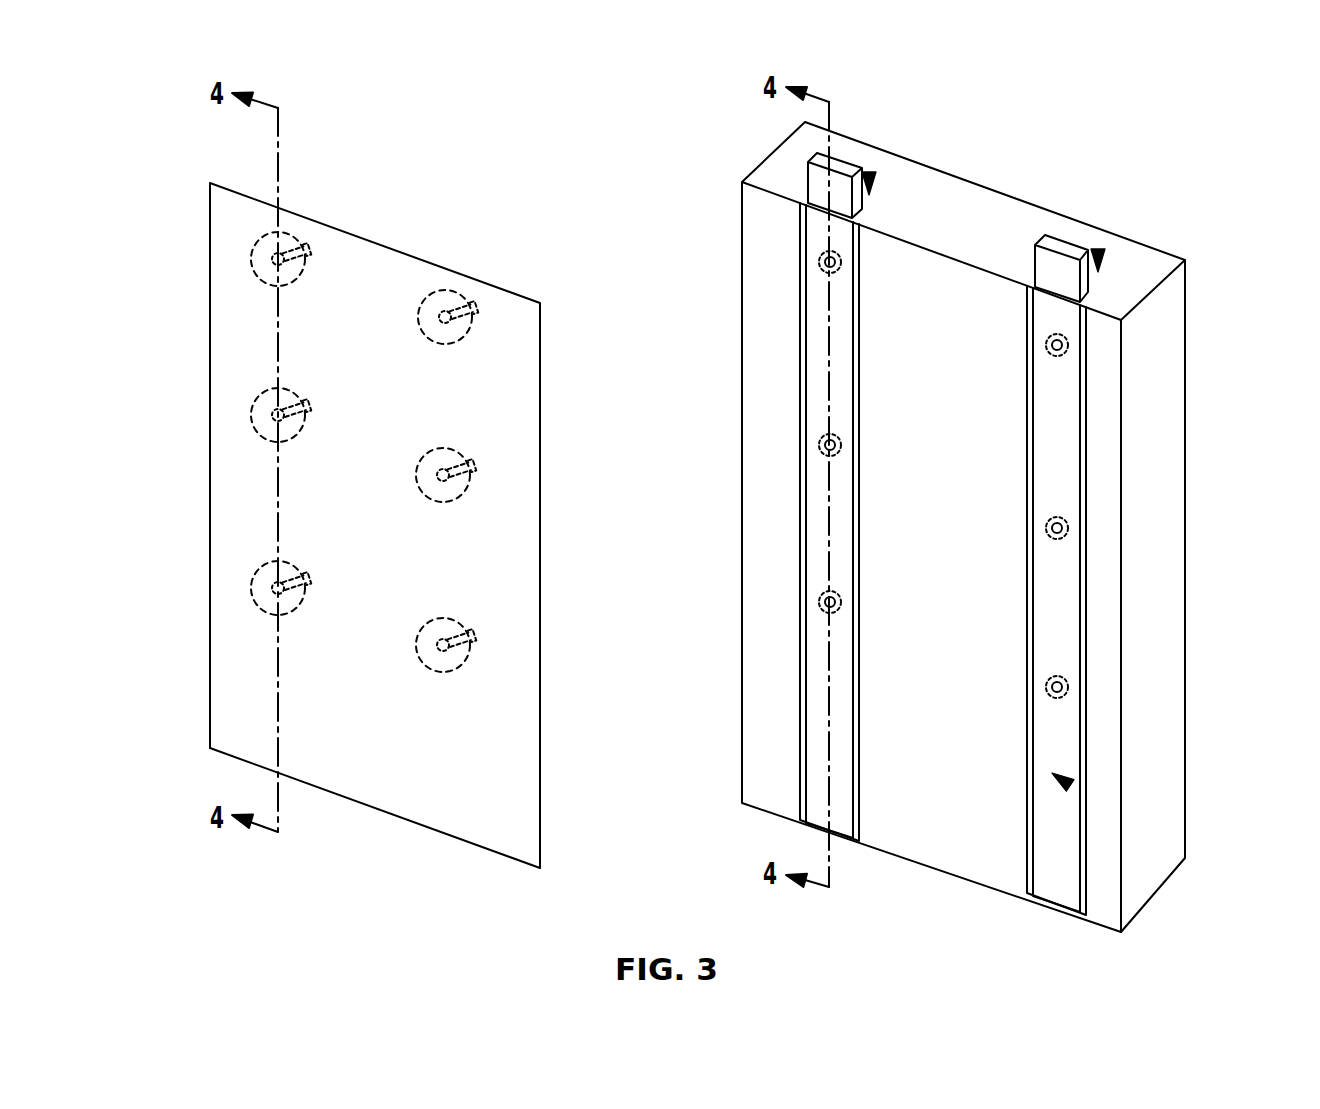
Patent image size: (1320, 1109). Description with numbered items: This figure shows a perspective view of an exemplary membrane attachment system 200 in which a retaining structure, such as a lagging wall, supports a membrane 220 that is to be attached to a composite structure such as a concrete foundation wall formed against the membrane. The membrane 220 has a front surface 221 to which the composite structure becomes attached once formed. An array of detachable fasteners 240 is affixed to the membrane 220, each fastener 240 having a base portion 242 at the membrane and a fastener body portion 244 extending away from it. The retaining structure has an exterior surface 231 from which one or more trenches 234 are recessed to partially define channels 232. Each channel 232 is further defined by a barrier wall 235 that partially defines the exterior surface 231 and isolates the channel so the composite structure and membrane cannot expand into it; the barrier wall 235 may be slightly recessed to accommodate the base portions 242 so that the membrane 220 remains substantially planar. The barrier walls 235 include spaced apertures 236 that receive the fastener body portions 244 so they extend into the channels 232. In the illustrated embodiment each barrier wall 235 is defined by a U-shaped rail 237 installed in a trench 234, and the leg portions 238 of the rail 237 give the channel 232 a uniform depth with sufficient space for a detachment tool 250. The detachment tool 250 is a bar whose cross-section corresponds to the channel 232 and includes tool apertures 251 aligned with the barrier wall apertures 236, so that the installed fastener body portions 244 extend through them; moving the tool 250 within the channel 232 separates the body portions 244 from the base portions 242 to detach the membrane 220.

The membrane attachment system 200 is at (378, 469).
The membrane 220 is at (409, 525).
The front surface 221 is at (409, 807).
The exterior surface 231 is at (963, 521).
The channel 232 is at (1025, 177).
The trench 234 is at (1007, 511).
The barrier wall 235 is at (1157, 626).
The aperture 236 is at (823, 265).
The U-shaped rail 237 is at (1155, 767).
The leg portion 238 is at (1024, 527).
The fastener 240 is at (378, 435).
The base portion 242 is at (380, 398).
The fastener body portion 244 is at (421, 412).
The detachment tool 250 is at (917, 209).
The tool aperture 251 is at (973, 485).